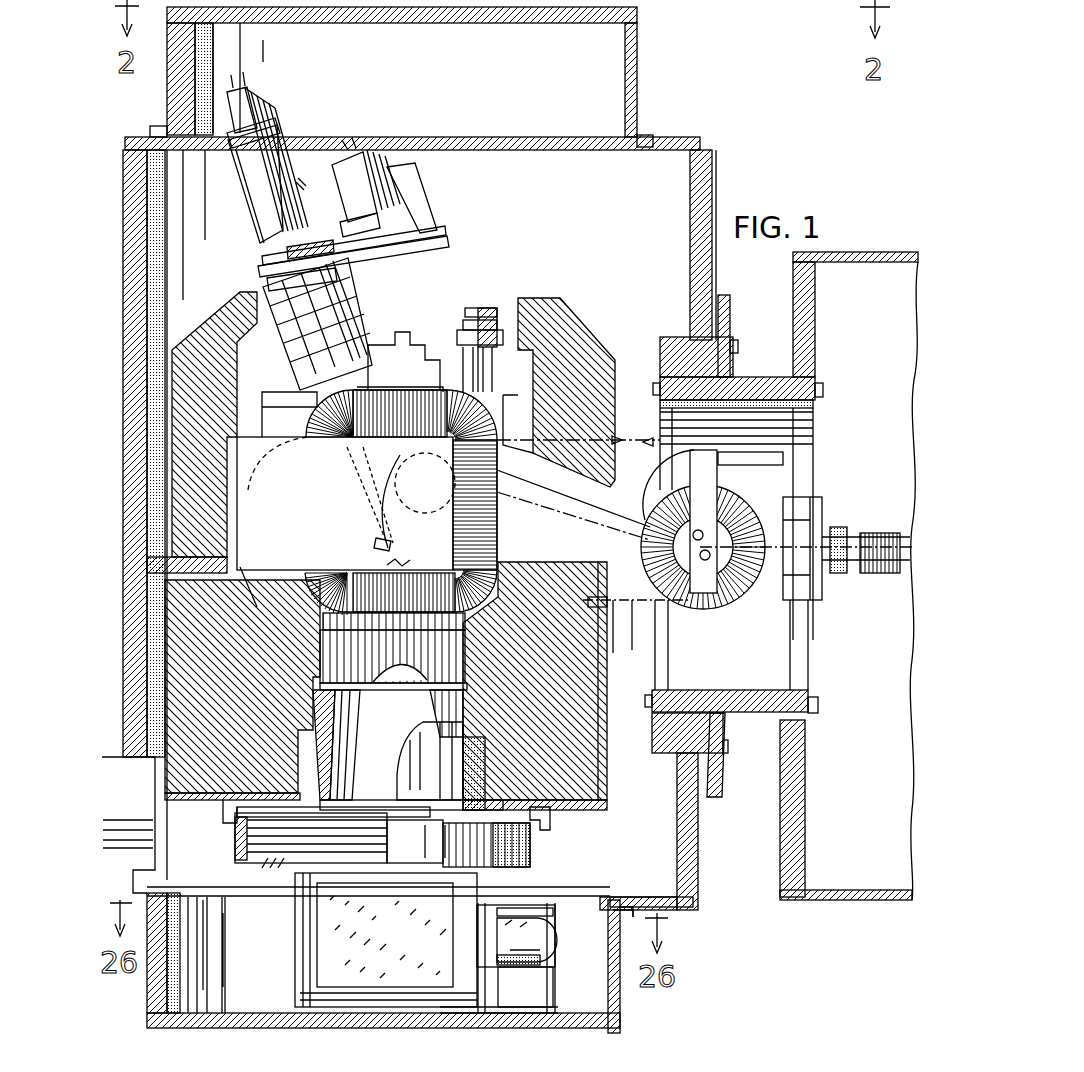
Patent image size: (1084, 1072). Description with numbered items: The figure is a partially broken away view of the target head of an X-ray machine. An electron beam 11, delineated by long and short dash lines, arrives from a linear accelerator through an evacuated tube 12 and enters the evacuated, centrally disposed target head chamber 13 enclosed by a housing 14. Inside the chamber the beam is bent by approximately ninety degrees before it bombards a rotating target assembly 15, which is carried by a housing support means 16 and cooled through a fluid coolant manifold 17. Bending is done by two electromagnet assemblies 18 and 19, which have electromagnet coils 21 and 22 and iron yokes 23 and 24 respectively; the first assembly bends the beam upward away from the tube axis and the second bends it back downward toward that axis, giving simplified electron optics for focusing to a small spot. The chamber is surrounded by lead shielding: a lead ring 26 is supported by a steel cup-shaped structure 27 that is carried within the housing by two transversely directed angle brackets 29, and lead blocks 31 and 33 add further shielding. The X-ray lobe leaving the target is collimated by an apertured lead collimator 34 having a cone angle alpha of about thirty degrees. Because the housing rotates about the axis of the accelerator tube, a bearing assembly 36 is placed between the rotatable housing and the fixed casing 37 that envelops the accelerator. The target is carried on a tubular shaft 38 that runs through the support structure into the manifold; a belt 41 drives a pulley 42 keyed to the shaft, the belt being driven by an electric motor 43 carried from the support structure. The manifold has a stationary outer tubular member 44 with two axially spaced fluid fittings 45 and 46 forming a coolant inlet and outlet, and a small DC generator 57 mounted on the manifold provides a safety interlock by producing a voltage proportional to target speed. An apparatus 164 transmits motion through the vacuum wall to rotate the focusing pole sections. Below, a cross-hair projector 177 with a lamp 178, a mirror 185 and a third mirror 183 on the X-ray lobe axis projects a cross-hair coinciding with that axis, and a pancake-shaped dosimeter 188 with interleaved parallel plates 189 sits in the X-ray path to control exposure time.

The electron beam 11 is at (557, 493).
The evacuated tube 12 is at (857, 537).
The target head chamber 13 is at (260, 407).
The housing 14 is at (703, 253).
The target assembly 15 is at (373, 543).
The housing support means 16 is at (352, 321).
The fluid coolant manifold 17 is at (248, 222).
The first electromagnet assembly 18 is at (637, 545).
The second electromagnet assembly 19 is at (510, 557).
The electromagnet coil 21 is at (653, 577).
The electromagnet coil 22 is at (478, 527).
The iron yoke 23 is at (762, 465).
The iron yoke 24 is at (278, 453).
The lead ring 26 is at (252, 608).
The steel cup-shaped structure 27 is at (607, 777).
The angle brackets 29 is at (252, 585).
The lead block 31 is at (225, 307).
The lead block 33 is at (593, 333).
The lead collimator 34 is at (812, 510).
The bearing assembly 36 is at (667, 342).
The fixed casing 37 is at (863, 253).
The tubular shaft 38 is at (680, 548).
The belt 41 is at (337, 243).
The pulley 42 is at (262, 263).
The electric motor 43 is at (377, 168).
The outer tubular member 44 is at (578, 427).
The fluid fitting 45 is at (293, 167).
The fluid fitting 46 is at (300, 187).
The DC generator 57 is at (259, 99).
The apparatus 164 is at (464, 314).
The cross-hair projector 177 is at (575, 992).
The lamp 178 is at (557, 932).
The third mirror 183 is at (337, 947).
The mirror 185 is at (567, 960).
The dosimeter 188 is at (540, 854).
The interleaved parallel plates 189 is at (266, 874).